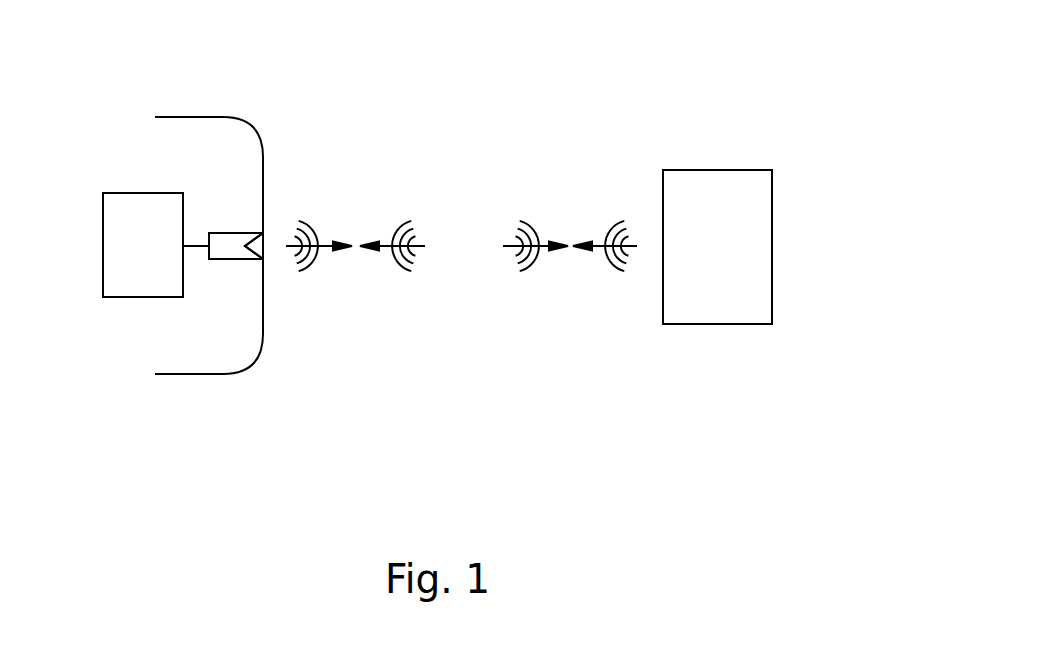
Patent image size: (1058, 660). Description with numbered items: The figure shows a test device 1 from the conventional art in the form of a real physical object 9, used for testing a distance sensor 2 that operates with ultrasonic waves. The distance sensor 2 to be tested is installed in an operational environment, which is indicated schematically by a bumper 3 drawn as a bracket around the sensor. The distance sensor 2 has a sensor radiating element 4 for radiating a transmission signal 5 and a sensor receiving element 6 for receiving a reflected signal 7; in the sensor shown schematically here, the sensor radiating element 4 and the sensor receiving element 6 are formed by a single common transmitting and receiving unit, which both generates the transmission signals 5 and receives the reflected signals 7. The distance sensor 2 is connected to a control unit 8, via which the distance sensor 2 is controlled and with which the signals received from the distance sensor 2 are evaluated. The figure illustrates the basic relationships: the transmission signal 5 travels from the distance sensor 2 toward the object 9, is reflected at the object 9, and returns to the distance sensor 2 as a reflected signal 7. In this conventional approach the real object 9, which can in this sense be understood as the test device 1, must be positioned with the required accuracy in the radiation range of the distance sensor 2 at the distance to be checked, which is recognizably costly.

The test device 1 is at (721, 112).
The distance sensor 2 is at (236, 246).
The bumper 3 is at (198, 117).
The sensor radiating element 4 is at (258, 241).
The transmission signal 5 is at (317, 267).
The sensor receiving element 6 is at (258, 241).
The reflected signal 7 is at (395, 265).
The control unit 8 is at (156, 245).
The object 9 is at (717, 247).